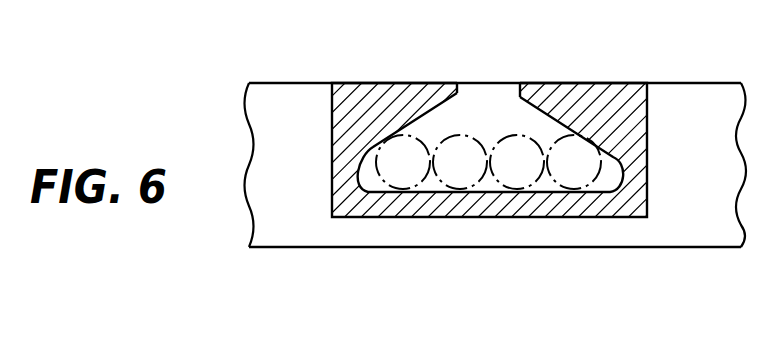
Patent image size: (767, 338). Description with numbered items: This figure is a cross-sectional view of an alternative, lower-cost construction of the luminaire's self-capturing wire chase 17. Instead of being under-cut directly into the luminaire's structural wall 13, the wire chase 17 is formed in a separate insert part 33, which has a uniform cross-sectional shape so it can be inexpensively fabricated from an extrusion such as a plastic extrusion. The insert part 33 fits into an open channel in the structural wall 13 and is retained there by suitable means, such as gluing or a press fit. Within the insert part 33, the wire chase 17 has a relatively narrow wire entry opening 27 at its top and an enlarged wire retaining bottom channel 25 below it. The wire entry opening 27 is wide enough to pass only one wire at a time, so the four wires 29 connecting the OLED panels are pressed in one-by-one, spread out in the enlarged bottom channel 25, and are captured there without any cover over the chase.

The structural wall 13 is at (650, 230).
The wire chase 17 is at (477, 120).
The enlarged wire retaining bottom channel 25 is at (368, 178).
The wire entry opening 27 is at (490, 85).
The wires 29 is at (400, 167).
The insert part 33 is at (647, 116).